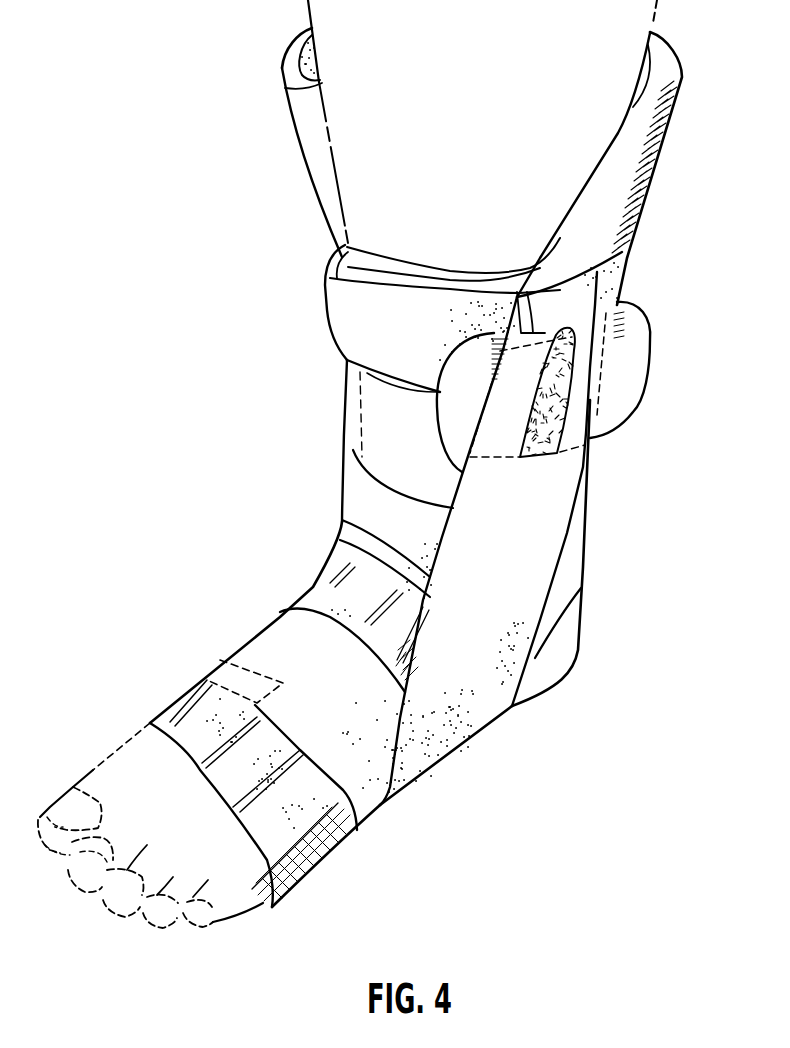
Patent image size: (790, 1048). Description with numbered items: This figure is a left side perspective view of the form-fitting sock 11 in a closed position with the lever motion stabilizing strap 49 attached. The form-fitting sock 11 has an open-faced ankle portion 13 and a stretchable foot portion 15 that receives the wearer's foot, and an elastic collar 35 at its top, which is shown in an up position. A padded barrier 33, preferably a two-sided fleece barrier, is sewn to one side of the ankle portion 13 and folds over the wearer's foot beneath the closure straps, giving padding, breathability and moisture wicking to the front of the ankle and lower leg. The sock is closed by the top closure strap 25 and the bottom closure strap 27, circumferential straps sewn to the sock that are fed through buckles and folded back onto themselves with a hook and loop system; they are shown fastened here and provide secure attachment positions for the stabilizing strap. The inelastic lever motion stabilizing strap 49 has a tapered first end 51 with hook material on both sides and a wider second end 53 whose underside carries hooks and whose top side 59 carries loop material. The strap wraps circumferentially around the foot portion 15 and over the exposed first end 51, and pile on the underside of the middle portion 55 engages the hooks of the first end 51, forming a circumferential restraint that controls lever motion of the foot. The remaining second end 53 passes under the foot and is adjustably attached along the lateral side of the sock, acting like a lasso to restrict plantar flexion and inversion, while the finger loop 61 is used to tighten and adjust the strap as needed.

The form-fitting sock 11 is at (178, 460).
The ankle portion 13 is at (572, 677).
The foot portion 15 is at (305, 833).
The top closure strap 25 is at (346, 313).
The bottom closure strap 27 is at (393, 531).
The padded barrier 33 is at (418, 488).
The elastic collar 35 is at (302, 118).
The lever motion stabilizing strap 49 is at (460, 693).
The first end 51 is at (230, 670).
The second end 53 is at (630, 367).
The middle portion 55 is at (277, 620).
The top side 59 is at (557, 511).
The finger loop 61 is at (617, 282).